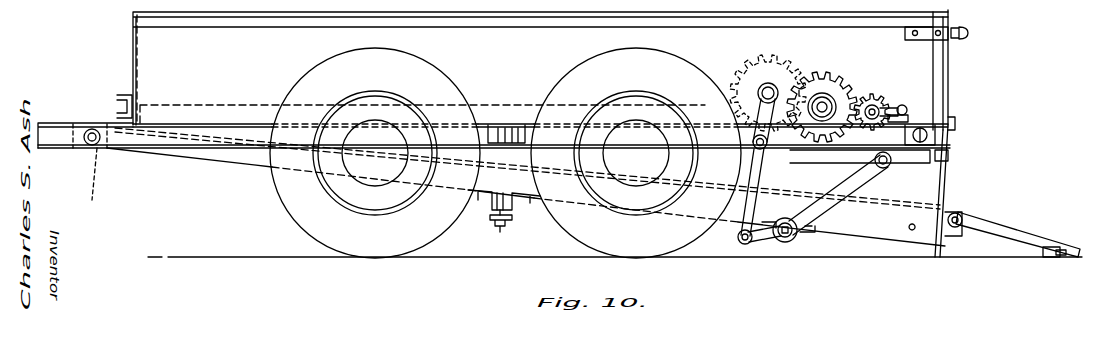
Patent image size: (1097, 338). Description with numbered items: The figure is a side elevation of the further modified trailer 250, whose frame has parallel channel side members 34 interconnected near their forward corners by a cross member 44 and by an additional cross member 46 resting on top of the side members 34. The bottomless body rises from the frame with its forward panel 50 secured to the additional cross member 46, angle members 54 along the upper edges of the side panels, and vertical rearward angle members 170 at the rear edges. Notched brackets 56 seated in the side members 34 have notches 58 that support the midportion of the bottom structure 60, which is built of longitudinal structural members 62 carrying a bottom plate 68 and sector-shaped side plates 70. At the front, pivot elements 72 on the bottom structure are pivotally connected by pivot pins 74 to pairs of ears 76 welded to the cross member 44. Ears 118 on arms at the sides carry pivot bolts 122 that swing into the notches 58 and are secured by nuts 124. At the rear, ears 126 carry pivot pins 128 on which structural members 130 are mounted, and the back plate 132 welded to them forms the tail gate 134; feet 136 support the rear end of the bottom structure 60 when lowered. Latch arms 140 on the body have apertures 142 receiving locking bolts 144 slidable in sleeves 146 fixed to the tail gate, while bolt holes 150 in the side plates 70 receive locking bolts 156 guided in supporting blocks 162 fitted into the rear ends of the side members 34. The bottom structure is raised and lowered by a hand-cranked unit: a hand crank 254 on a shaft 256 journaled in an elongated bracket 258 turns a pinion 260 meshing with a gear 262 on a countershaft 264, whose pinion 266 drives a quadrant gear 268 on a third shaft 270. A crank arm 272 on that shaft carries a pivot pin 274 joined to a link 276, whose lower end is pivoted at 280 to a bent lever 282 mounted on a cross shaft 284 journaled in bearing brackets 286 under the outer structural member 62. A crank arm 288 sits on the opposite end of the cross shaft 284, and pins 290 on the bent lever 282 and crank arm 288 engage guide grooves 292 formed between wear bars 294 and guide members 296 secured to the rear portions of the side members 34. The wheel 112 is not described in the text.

The side member 34 is at (200, 160).
The cross member 44 is at (75, 137).
The additional cross member 46 is at (122, 96).
The forward panel 50 is at (140, 61).
The angle member 54 is at (672, 14).
The notched bracket 56 is at (516, 125).
The notch 58 is at (504, 125).
The bottom structure 60 is at (232, 165).
The longitudinal structural member 62 is at (866, 230).
The bottom plate 68 is at (806, 192).
The side plate 70 is at (238, 105).
The pivot element 72 is at (90, 178).
The pivot pin 74 is at (90, 145).
The ear 76 is at (85, 150).
The wheel 112 is at (316, 228).
The ear 118 is at (480, 196).
The pivot bolt 122 is at (492, 212).
The nut 124 is at (505, 228).
The ear 126 is at (962, 210).
The pivot pin 128 is at (955, 230).
The structural member 130 is at (977, 232).
The back plate 132 is at (1022, 230).
The tail gate 134 is at (1010, 245).
The foot 136 is at (930, 252).
The latch arm 140 is at (964, 33).
The bolt-receiving aperture 142 is at (963, 26).
The locking bolt 144 is at (1062, 255).
The sleeve 146 is at (1046, 257).
The bolt hole 150 is at (910, 226).
The locking bolt 156 is at (930, 135).
The supporting block 162 is at (956, 126).
The rearward angle member 170 is at (940, 56).
The further modified trailer 250 is at (108, 95).
The hand crank 254 is at (907, 106).
The shaft 256 is at (874, 100).
The elongated bracket 258 is at (790, 62).
The pinion 260 is at (880, 104).
The gear 262 is at (846, 62).
The countershaft 264 is at (820, 110).
The pinion 266 is at (823, 92).
The quadrant gear 268 is at (760, 57).
The third shaft 270 is at (760, 84).
The crank arm 272 is at (752, 140).
The pivot pin 274 is at (757, 149).
The link 276 is at (755, 170).
The pivot 280 is at (738, 240).
The bent lever 282 is at (766, 238).
The cross shaft 284 is at (786, 243).
The bearing bracket 286 is at (772, 218).
The crank arm 288 is at (830, 180).
The pin 290 is at (886, 168).
The guide groove 292 is at (920, 165).
The wear bar 294 is at (952, 146).
The guide member 296 is at (940, 164).